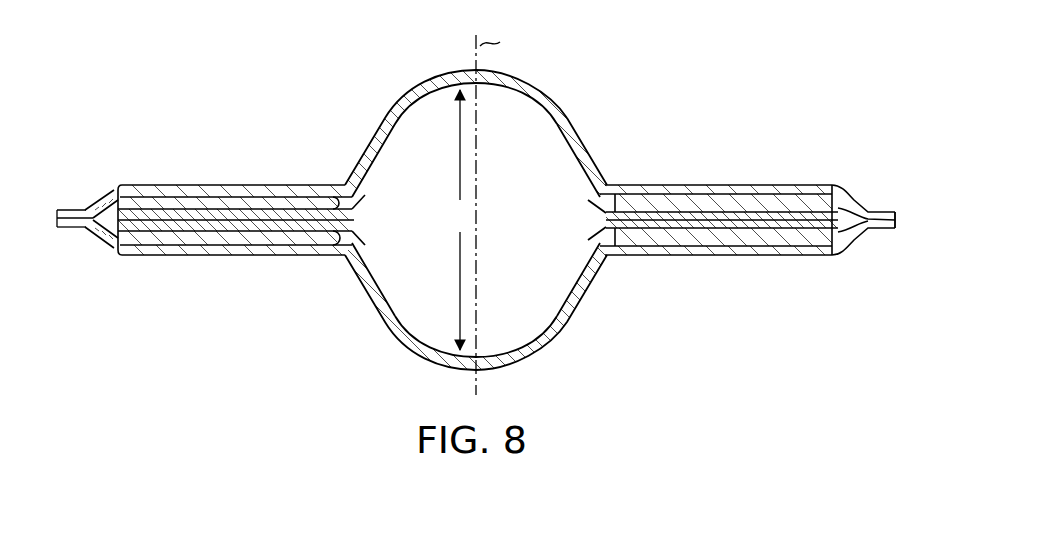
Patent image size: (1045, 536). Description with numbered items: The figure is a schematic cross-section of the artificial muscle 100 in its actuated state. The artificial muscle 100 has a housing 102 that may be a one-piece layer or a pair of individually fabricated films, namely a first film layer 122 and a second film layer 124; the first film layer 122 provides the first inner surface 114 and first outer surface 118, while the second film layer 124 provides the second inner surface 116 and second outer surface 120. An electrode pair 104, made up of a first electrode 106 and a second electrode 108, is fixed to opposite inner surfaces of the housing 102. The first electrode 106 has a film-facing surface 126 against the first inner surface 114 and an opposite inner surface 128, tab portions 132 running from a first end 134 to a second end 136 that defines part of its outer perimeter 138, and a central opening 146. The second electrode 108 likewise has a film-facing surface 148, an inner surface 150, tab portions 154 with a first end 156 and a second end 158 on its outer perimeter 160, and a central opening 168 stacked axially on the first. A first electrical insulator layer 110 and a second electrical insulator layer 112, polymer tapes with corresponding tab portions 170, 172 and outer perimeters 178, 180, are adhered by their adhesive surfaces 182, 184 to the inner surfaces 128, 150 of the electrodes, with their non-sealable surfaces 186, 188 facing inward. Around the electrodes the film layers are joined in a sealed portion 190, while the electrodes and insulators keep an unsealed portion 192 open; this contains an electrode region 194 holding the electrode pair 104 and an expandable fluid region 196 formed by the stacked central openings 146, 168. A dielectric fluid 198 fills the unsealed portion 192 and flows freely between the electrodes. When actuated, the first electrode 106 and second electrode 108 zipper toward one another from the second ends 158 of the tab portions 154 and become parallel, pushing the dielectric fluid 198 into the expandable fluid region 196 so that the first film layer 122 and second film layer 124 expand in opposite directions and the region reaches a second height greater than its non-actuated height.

The artificial muscle 100 is at (258, 108).
The housing 102 is at (100, 140).
The electrode pair 104 is at (822, 272).
The first electrode 106 is at (700, 273).
The second electrode 108 is at (715, 165).
The first electrical insulator layer 110 is at (533, 302).
The second electrical insulator layer 112 is at (537, 128).
The first inner surface 114 is at (112, 233).
The second inner surface 116 is at (103, 208).
The first outer surface 118 is at (60, 230).
The second outer surface 120 is at (70, 209).
The first film layer 122 is at (393, 336).
The second film layer 124 is at (387, 90).
The film-facing surface 126 is at (213, 236).
The inner surface 128 is at (163, 246).
The tab portions 132 is at (250, 257).
The first end 134 is at (345, 252).
The second end 136 is at (132, 246).
The outer perimeter 138 is at (120, 250).
The central opening 146 is at (402, 286).
The film-facing surface 148 is at (213, 207).
The inner surface 150 is at (270, 212).
The tab portions 154 is at (300, 170).
The first end 156 is at (348, 186).
The second end 158 is at (150, 198).
The outer perimeter 160 is at (123, 190).
The central opening 168 is at (567, 172).
The tab portions 170 is at (770, 234).
The tab portions 172 is at (803, 213).
The outer perimeter 178 is at (848, 232).
The outer perimeter 180 is at (848, 208).
The adhesive surface 182 is at (662, 228).
The adhesive surface 184 is at (666, 212).
The non-sealable surface 186 is at (432, 340).
The non-sealable surface 188 is at (425, 108).
The sealed portion 190 is at (906, 219).
The unsealed portion 192 is at (770, 178).
The electrode region 194 is at (633, 262).
The expandable fluid region 196 is at (521, 103).
The dielectric fluid 198 is at (528, 328).